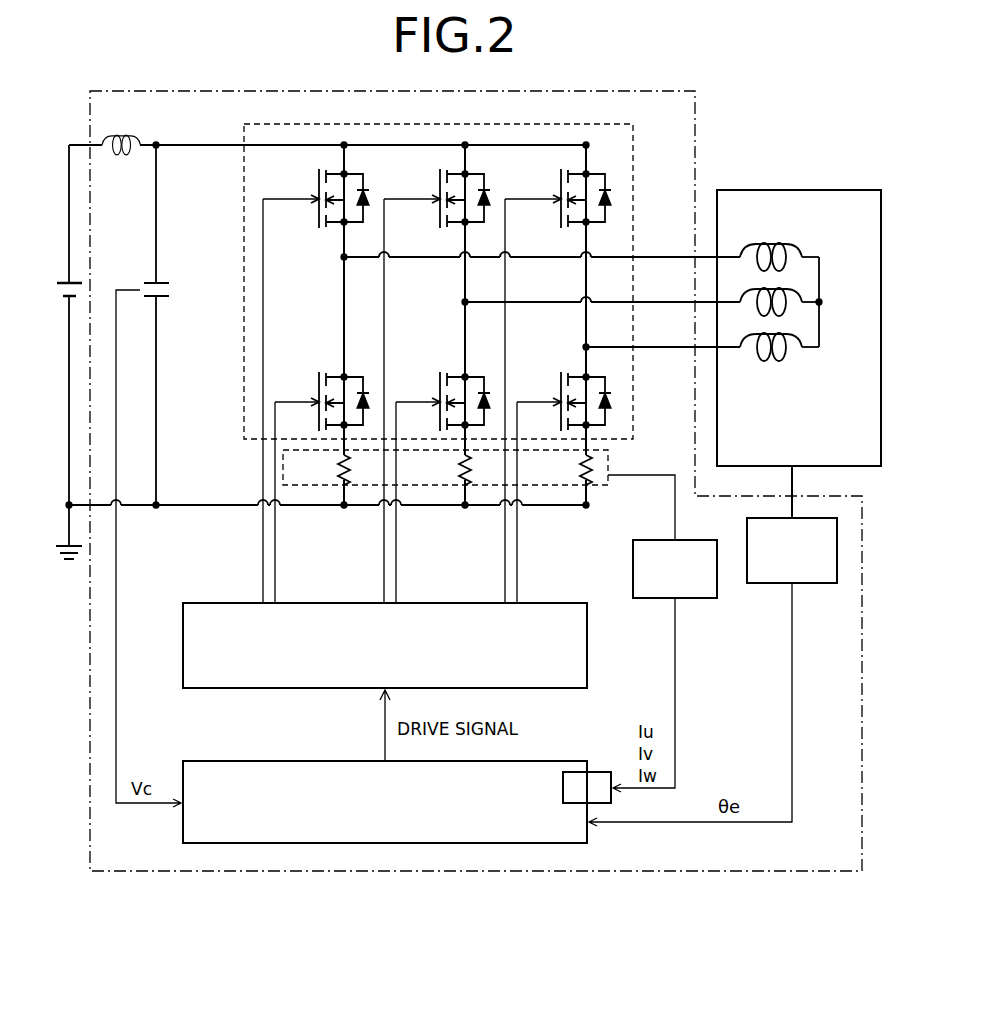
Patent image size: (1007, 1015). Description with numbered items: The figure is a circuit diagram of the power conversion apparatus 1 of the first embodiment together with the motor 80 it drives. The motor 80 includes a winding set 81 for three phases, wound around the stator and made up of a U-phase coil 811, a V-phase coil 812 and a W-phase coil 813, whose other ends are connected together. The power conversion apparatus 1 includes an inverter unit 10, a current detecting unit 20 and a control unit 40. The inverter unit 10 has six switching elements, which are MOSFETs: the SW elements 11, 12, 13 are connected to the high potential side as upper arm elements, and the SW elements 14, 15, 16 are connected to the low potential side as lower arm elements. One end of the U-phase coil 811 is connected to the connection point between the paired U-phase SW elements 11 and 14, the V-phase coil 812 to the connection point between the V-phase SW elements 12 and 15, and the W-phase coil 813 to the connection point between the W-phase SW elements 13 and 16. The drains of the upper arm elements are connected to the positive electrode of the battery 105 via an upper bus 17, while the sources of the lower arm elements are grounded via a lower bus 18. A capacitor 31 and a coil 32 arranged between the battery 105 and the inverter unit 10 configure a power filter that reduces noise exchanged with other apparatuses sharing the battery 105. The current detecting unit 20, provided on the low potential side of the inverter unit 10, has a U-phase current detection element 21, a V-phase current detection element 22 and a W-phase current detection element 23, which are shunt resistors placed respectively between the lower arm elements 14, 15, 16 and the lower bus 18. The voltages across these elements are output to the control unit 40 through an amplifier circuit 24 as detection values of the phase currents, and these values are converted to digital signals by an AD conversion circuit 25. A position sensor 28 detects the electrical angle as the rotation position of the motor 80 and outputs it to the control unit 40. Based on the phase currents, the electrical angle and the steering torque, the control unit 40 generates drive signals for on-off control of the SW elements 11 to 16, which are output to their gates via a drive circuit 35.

The power conversion apparatus 1 is at (695, 122).
The inverter unit 10 is at (243, 400).
The U-phase switching element (upper arm element) 11 is at (317, 183).
The V-phase switching element (upper arm element) 12 is at (438, 183).
The W-phase switching element (upper arm element) 13 is at (559, 183).
The U-phase lower arm element 14 is at (326, 375).
The V-phase lower arm element 15 is at (447, 375).
The W-phase lower arm element 16 is at (568, 375).
The upper bus 17 is at (212, 146).
The lower bus 18 is at (196, 504).
The current detecting unit 20 is at (610, 470).
The U-phase current detection element 21 is at (338, 468).
The V-phase current detection element 22 is at (459, 468).
The W-phase current detection element 23 is at (579, 468).
The amplifier circuit 24 is at (633, 558).
The analog-to-digital (AD) conversion circuit 25 is at (602, 771).
The position sensor 28 is at (762, 584).
The capacitor 31 is at (145, 282).
The coil 32 is at (118, 158).
The drive circuit 35 is at (200, 602).
The control unit 40 is at (205, 760).
The motor 80 is at (821, 189).
The winding set 81 is at (801, 328).
The U-phase coil 811 is at (787, 245).
The V-phase coil 812 is at (797, 290).
The W-phase coil 813 is at (799, 338).
The battery 105 is at (60, 282).